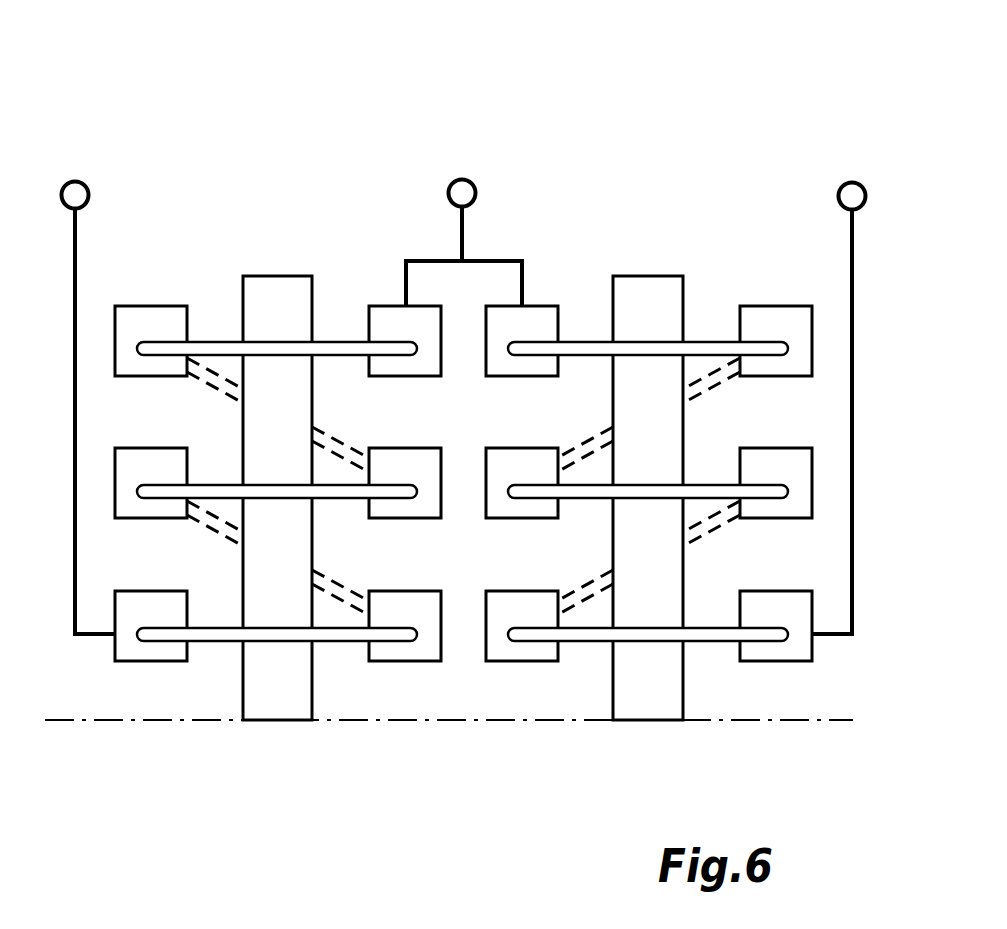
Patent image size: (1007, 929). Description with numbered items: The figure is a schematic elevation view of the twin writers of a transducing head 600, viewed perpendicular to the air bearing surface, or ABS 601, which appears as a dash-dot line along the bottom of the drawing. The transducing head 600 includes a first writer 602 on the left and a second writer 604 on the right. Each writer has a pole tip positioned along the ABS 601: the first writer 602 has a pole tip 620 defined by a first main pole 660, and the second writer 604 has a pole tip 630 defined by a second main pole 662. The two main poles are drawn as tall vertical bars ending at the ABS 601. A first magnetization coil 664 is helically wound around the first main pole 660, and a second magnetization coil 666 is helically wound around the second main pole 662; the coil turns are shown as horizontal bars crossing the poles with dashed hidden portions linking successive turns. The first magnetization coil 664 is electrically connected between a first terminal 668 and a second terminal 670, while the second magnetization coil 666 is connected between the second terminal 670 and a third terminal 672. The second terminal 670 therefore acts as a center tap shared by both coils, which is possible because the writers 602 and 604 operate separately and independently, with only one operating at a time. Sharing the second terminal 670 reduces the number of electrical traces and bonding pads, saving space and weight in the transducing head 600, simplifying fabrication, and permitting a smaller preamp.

The transducing head 600 is at (566, 106).
The ABS 601 is at (157, 722).
The first writer 602 is at (252, 205).
The second writer 604 is at (626, 243).
The pole tip 620 is at (280, 722).
The pole tip 630 is at (655, 722).
The first main pole 660 is at (287, 295).
The second main pole 662 is at (647, 290).
The first magnetization coil 664 is at (150, 305).
The second magnetization coil 666 is at (782, 315).
The first terminal 668 is at (75, 181).
The second terminal 670 is at (460, 186).
The third terminal 672 is at (852, 182).